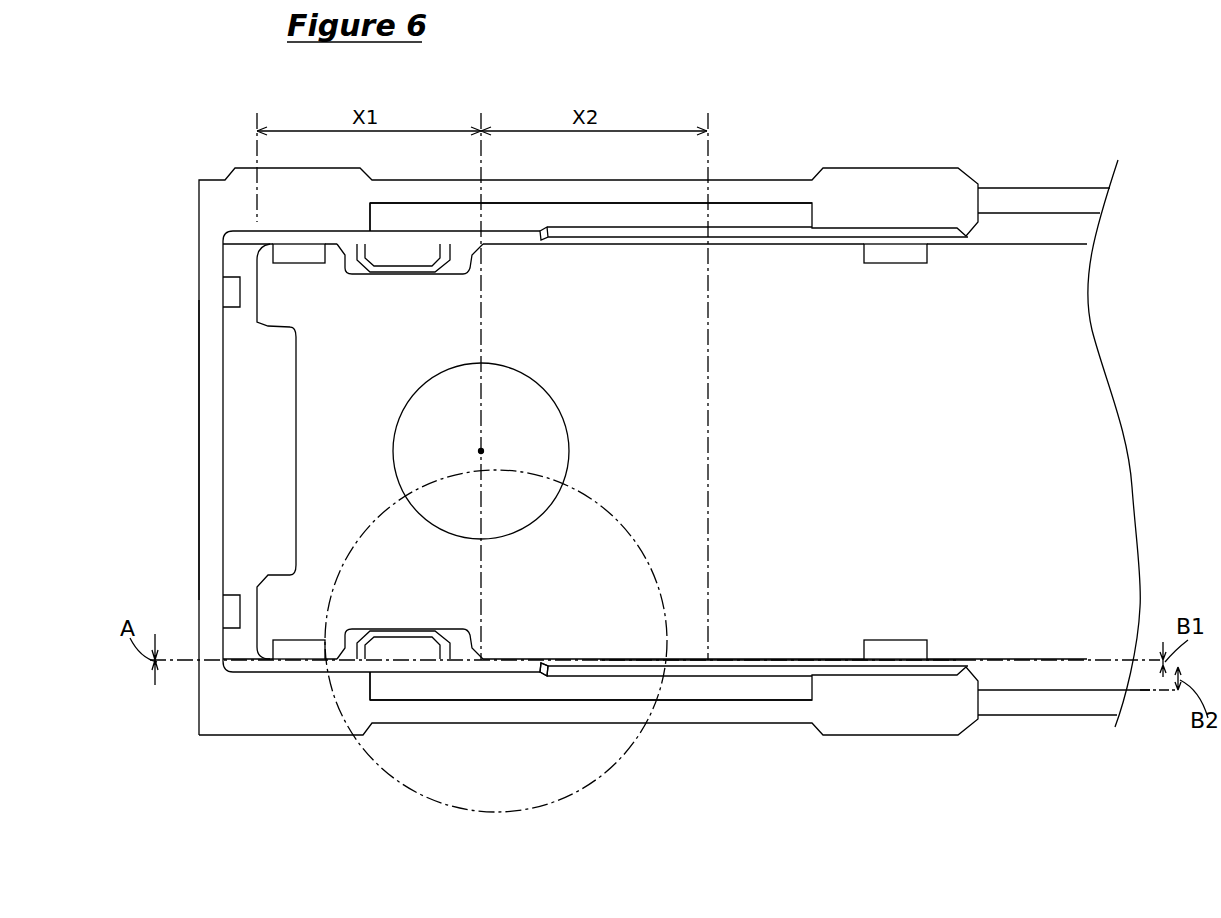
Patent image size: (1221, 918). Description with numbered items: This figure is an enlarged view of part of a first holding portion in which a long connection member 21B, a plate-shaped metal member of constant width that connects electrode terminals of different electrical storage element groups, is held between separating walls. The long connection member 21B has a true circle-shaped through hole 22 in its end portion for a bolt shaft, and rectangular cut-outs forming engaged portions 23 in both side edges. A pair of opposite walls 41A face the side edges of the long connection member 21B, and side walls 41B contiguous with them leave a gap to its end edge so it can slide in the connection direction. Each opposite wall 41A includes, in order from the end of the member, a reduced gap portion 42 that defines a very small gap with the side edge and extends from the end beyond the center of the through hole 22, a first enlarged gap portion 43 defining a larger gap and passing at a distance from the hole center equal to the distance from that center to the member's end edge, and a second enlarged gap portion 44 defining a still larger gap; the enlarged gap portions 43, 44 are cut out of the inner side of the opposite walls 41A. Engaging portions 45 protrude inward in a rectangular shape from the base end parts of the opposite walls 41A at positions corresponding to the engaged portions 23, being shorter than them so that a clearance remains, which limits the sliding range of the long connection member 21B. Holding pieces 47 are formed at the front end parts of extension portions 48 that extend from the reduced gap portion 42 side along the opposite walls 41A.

The long connection member 21B is at (1102, 485).
The through hole 22 is at (420, 525).
The engaged portion 23 is at (420, 268).
The opposite wall 41A is at (1045, 200).
The side wall 41B is at (210, 484).
The reduced gap portion 42 is at (500, 660).
The first enlarged gap portion 43 is at (747, 660).
The second enlarged gap portion 44 is at (1017, 690).
The engaging portion 45 is at (382, 257).
The holding piece 47 is at (287, 255).
The extension portion 48 is at (760, 195).